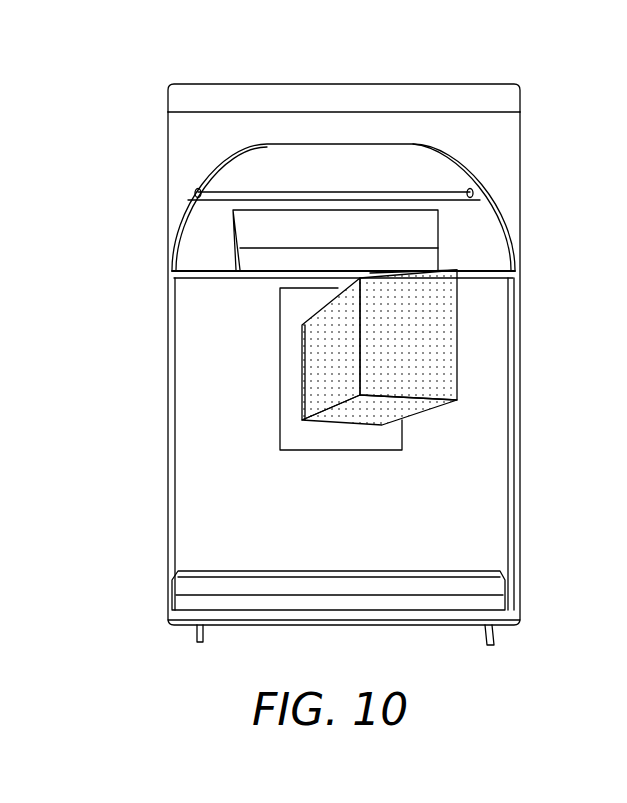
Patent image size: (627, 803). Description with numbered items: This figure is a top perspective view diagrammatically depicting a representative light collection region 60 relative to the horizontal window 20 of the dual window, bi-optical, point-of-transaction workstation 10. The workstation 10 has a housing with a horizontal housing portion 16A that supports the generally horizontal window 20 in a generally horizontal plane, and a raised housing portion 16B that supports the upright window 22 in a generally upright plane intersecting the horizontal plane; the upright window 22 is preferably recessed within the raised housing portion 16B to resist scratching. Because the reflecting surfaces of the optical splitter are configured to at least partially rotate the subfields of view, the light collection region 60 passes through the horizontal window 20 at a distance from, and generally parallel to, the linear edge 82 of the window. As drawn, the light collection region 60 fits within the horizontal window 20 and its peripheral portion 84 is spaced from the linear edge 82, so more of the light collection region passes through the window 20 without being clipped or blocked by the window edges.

The workstation 10 is at (156, 59).
The horizontal housing portion 16A is at (515, 521).
The raised housing portion 16B is at (520, 154).
The horizontal window 20 is at (280, 322).
The upright window 22 is at (253, 234).
The linear edge 82 is at (280, 386).
The peripheral portion 84 is at (458, 334).
The light collection region 60 is at (433, 388).